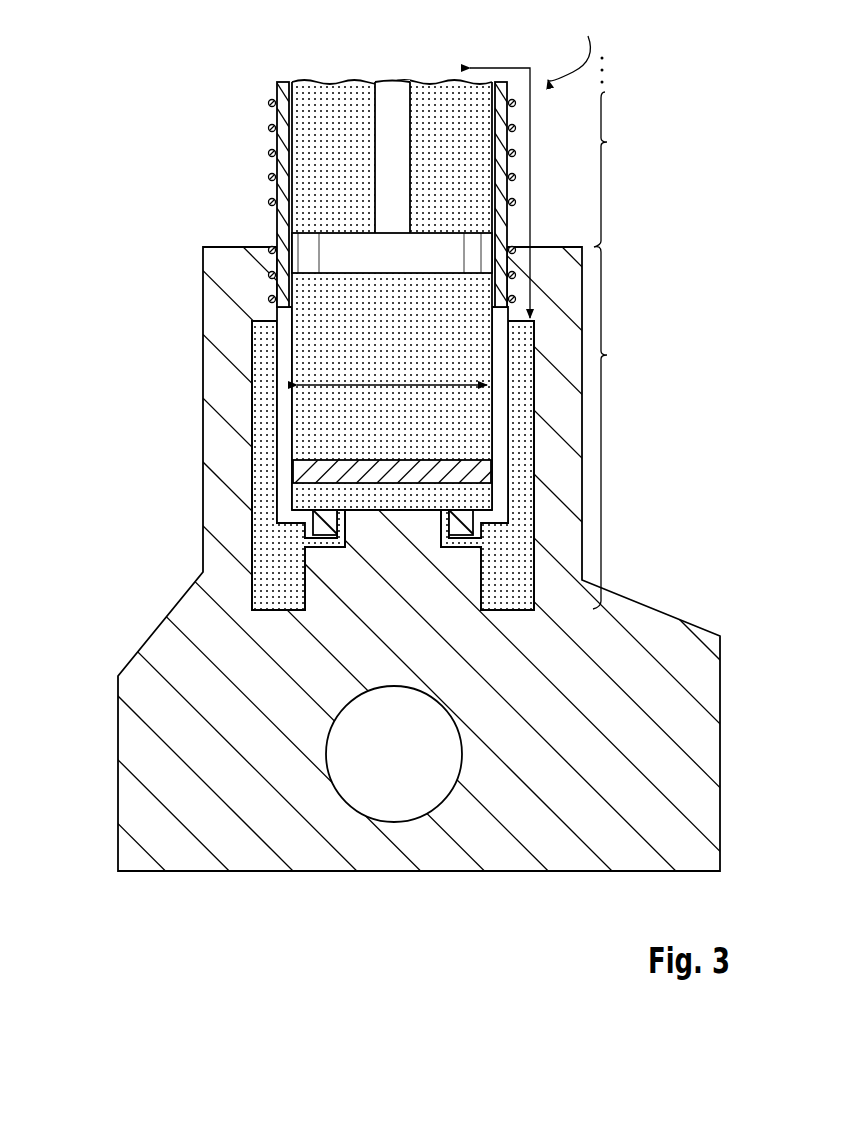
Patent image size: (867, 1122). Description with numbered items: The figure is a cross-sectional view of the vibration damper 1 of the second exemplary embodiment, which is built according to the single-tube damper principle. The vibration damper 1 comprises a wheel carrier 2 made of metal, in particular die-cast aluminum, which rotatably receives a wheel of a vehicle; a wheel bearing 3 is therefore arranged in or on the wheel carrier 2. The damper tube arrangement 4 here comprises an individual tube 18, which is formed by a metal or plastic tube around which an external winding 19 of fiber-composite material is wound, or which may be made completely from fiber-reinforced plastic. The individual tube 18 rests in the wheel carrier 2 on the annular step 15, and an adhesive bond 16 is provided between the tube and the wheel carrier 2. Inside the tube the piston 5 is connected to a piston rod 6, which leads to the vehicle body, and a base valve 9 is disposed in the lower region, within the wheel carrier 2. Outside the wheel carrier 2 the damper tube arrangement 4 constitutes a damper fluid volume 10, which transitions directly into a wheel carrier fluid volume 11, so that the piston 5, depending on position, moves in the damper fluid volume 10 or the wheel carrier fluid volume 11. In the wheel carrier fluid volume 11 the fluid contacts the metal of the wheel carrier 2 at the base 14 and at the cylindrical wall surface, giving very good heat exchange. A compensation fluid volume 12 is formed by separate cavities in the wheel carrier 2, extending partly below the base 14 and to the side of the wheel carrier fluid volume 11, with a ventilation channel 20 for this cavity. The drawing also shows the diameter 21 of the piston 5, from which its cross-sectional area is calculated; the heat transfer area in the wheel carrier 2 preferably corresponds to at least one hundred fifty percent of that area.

The vibration damper 1 is at (162, 113).
The wheel carrier 2 is at (152, 746).
The wheel bearing 3 is at (330, 784).
The damper tube arrangement 4 is at (573, 45).
The piston 5 is at (330, 250).
The piston rod 6 is at (398, 95).
The base valve 9 is at (320, 466).
The damper fluid volume 10 is at (619, 152).
The wheel carrier fluid volume 11 is at (619, 428).
The compensation fluid volume 12 is at (272, 548).
The base 14 is at (402, 513).
The annular step 15 is at (281, 310).
The adhesive bond 16 is at (272, 288).
The individual tube 18 is at (272, 105).
The external winding 19 is at (272, 177).
The ventilation channel 20 is at (505, 68).
The diameter 21 is at (375, 388).